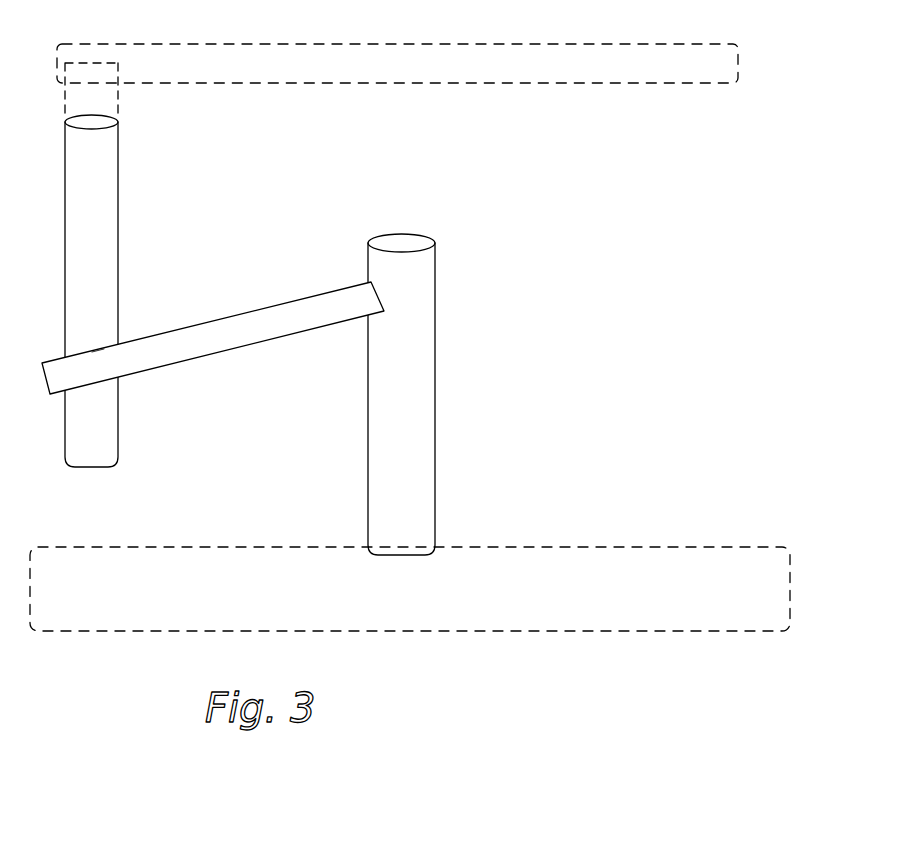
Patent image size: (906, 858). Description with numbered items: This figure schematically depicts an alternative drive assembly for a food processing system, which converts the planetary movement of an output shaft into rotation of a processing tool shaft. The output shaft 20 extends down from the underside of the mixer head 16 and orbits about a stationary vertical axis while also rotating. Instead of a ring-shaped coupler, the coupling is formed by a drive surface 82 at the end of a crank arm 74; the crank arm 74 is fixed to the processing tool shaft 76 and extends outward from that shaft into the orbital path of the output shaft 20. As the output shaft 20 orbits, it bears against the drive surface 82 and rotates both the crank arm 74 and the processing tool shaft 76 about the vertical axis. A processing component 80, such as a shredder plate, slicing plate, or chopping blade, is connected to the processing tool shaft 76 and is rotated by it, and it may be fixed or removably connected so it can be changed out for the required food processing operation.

The mixer head 16 is at (222, 44).
The output shaft 20 is at (105, 216).
The crank arm 74 is at (210, 328).
The processing tool shaft 76 is at (420, 327).
The processing component 80 is at (506, 545).
The drive surface 82 is at (98, 348).